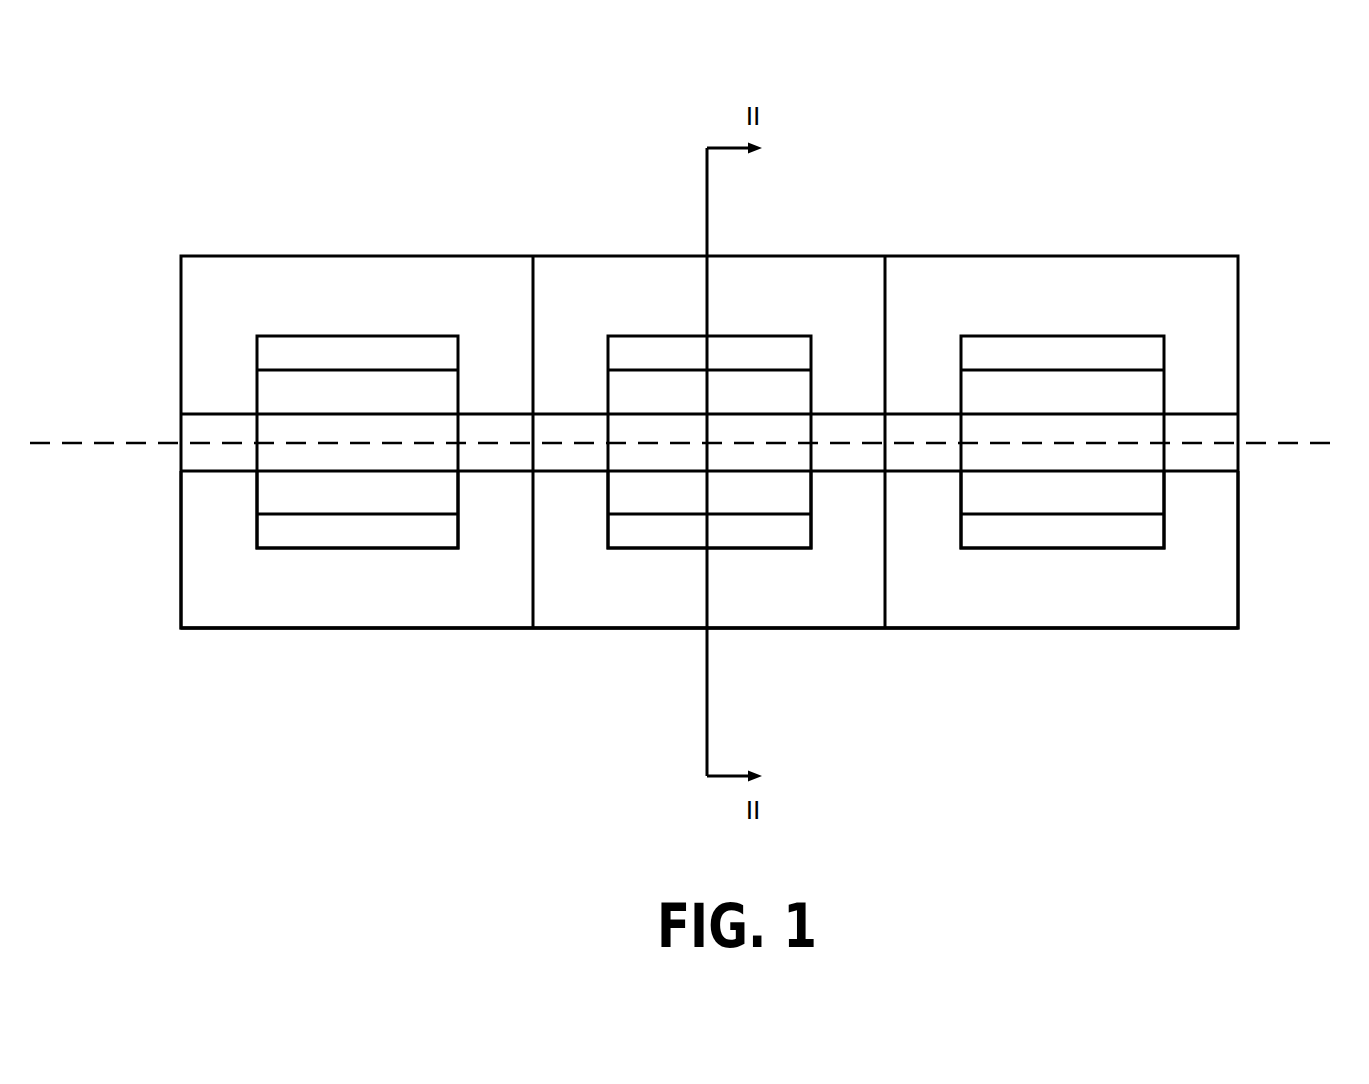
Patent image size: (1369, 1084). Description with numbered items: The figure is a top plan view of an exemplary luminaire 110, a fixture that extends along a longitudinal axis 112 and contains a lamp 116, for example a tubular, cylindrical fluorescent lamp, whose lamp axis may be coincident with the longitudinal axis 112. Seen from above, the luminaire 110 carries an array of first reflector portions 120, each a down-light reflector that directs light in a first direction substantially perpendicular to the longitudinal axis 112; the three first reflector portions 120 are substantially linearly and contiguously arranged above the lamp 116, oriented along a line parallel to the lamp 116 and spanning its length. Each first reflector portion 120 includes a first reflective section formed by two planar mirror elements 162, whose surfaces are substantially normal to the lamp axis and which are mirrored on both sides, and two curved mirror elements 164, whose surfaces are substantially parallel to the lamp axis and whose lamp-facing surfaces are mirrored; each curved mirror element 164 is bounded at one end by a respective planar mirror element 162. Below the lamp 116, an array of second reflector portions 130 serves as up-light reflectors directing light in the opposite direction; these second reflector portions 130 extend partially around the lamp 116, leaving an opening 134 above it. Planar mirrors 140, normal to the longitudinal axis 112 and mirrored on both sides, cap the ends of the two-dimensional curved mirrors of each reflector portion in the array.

The luminaire 110 is at (1228, 157).
The longitudinal axis 112 is at (696, 488).
The lamp 116 is at (205, 428).
The first reflector portion 120 is at (975, 350).
The second reflector portion 130 is at (980, 615).
The opening 134 is at (1208, 323).
The planar mirror 140 is at (182, 298).
The planar mirror element 162 is at (253, 491).
The curved mirror element 164 is at (377, 366).